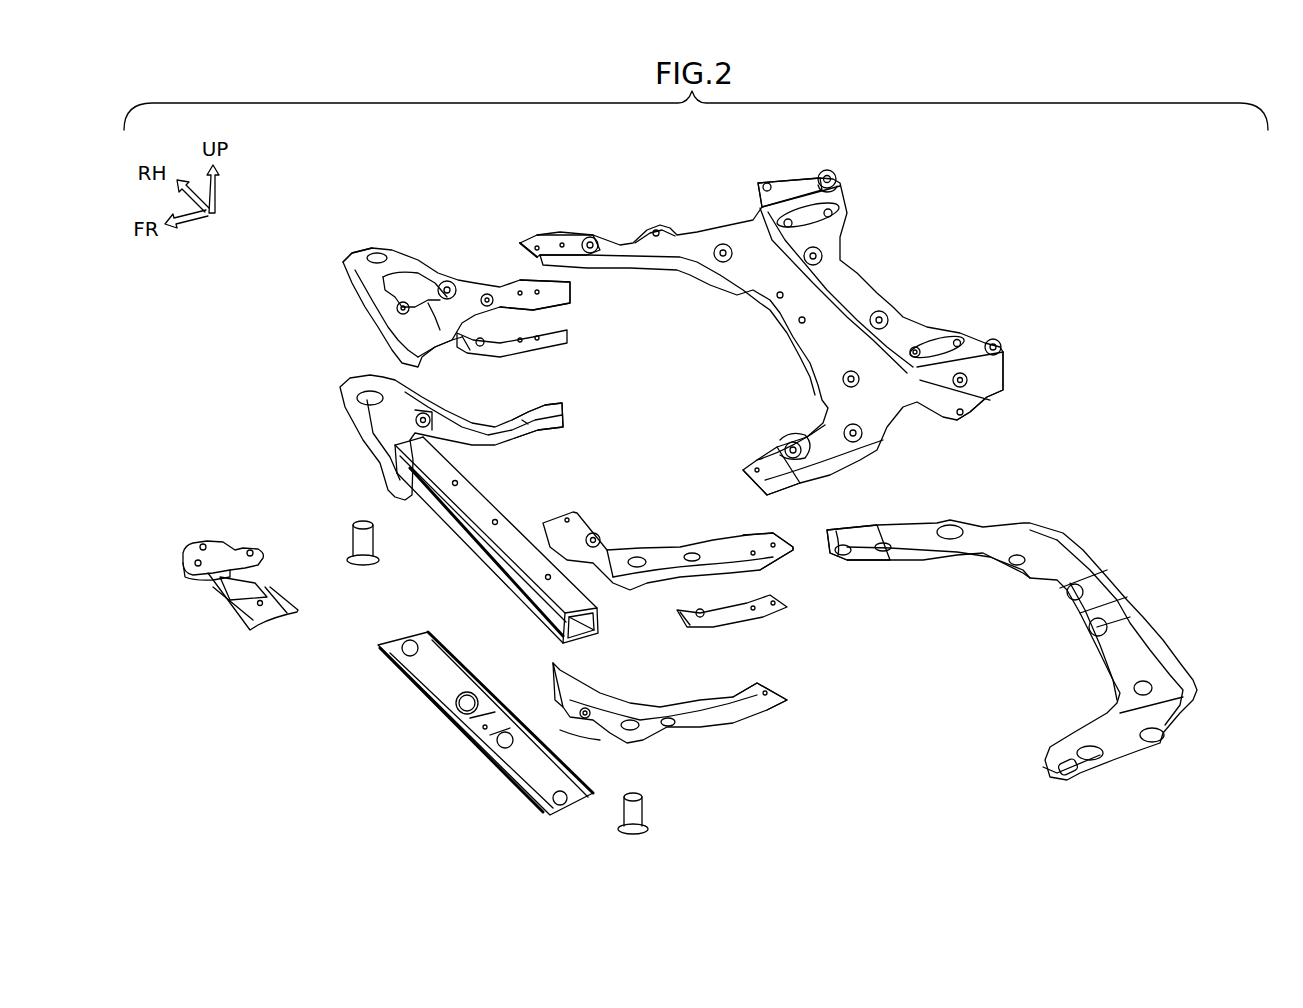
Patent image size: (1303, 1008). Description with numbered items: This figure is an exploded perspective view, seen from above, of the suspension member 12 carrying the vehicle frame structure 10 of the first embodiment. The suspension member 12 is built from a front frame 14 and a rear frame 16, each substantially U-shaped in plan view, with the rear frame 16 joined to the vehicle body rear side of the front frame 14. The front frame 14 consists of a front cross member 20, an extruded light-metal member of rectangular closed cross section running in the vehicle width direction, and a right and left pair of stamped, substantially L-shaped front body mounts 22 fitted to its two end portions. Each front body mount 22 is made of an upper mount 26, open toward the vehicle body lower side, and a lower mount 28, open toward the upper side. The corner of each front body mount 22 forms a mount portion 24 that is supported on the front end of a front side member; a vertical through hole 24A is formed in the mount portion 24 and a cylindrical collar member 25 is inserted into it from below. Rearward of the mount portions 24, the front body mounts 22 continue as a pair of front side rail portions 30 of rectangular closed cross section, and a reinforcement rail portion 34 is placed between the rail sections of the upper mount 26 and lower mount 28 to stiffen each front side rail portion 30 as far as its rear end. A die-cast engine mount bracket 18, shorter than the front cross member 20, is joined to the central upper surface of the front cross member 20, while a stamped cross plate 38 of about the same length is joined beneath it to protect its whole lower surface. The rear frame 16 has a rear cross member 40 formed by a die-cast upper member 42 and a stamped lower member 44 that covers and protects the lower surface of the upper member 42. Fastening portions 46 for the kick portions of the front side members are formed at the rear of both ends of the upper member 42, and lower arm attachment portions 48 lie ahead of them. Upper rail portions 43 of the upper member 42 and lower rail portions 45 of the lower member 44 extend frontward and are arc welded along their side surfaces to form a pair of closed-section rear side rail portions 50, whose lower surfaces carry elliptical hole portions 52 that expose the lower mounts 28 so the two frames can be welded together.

The suspension member 10 is at (1025, 768).
The suspension member 12 is at (910, 212).
The front frame 14 is at (450, 570).
The rear frame 16 is at (1022, 318).
The engine mount bracket 18 is at (245, 547).
The front cross member 20 is at (515, 590).
The front body mount 22 is at (248, 303).
The mount portion 24 is at (357, 247).
The through hole 24A is at (378, 255).
The collar member 25 is at (362, 540).
The upper mount 26 is at (340, 270).
The lower mount 28 is at (340, 392).
The front side rail portion 30 is at (522, 286).
The reinforcement rail portion 34 is at (543, 343).
The cross plate 38 is at (440, 712).
The rear cross member 40 is at (892, 482).
The upper member 42 is at (870, 283).
The upper rail portion 43 is at (630, 240).
The lower member 44 is at (1130, 643).
The lower rail portion 45 is at (900, 565).
The fastening portion 46 is at (830, 178).
The lower arm attachment portion 48 is at (778, 196).
The rear side rail portion 50 is at (553, 232).
The hole portion 52 is at (843, 553).